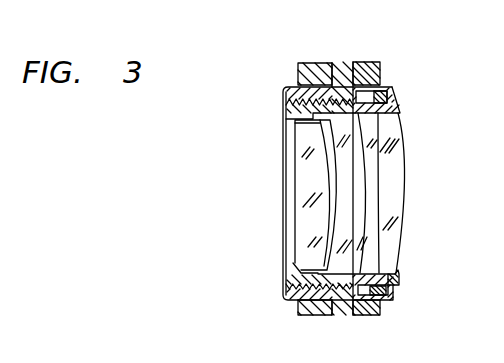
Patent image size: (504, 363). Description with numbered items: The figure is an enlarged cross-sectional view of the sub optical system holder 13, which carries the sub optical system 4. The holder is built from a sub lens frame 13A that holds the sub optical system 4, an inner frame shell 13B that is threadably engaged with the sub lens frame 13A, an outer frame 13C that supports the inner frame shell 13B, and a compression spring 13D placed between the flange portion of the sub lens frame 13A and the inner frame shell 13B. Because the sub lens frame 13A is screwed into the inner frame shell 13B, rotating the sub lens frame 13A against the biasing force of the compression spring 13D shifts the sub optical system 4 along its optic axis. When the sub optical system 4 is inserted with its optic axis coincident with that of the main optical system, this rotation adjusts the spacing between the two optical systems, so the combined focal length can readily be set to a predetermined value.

The sub optical system 4 is at (406, 177).
The sub optical system holder 13 is at (276, 94).
The sub lens frame 13A is at (399, 277).
The inner frame shell 13B is at (290, 301).
The outer frame 13C is at (315, 63).
The compression spring 13D is at (383, 301).